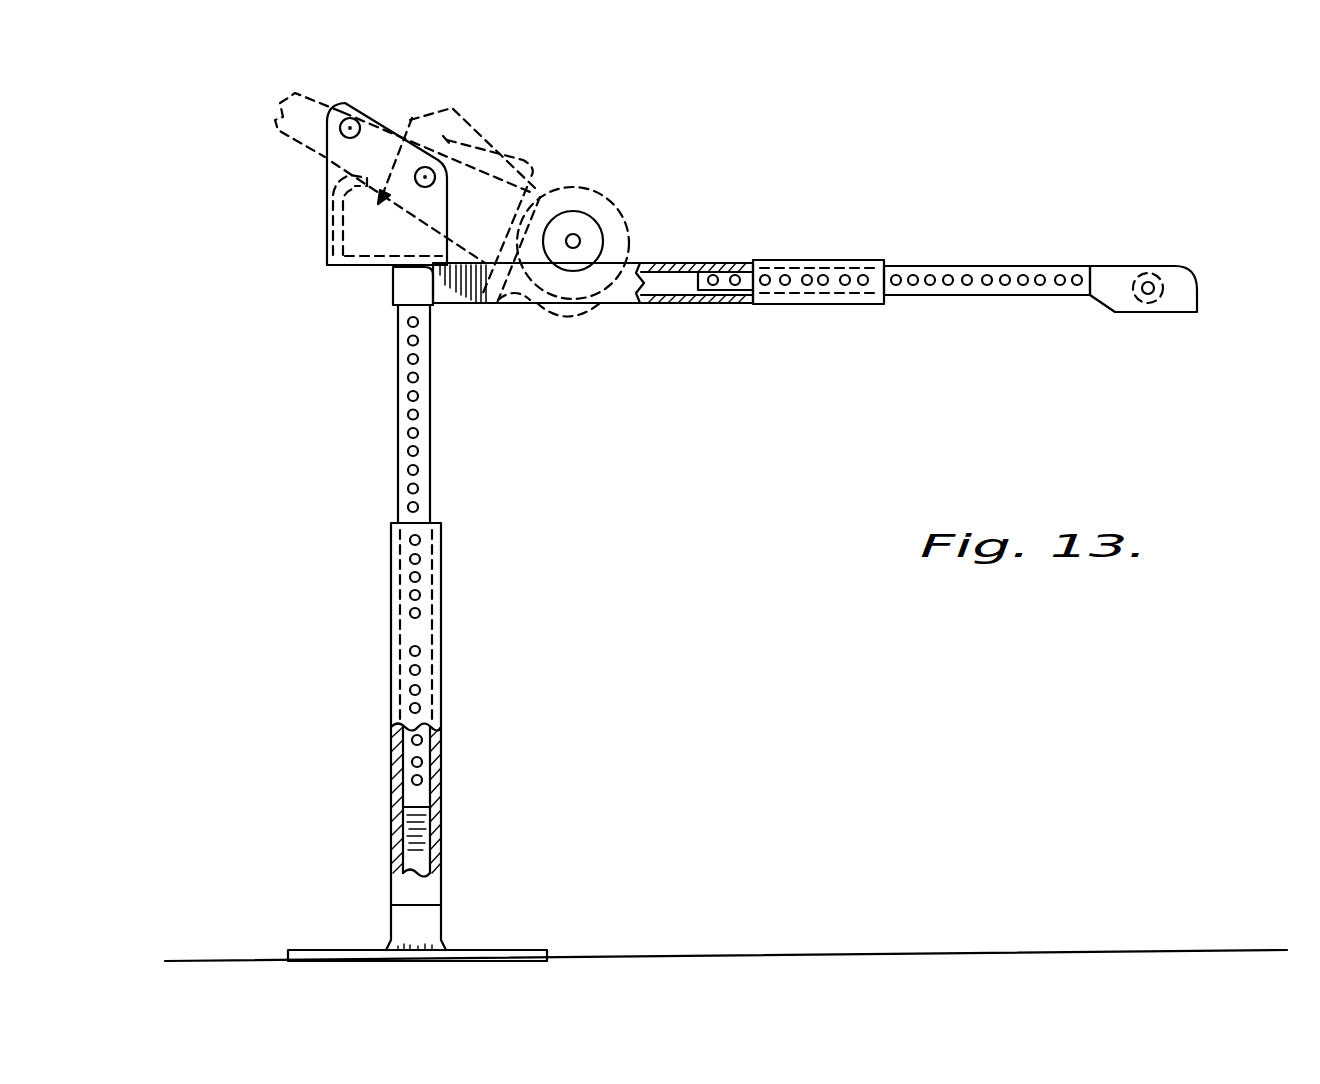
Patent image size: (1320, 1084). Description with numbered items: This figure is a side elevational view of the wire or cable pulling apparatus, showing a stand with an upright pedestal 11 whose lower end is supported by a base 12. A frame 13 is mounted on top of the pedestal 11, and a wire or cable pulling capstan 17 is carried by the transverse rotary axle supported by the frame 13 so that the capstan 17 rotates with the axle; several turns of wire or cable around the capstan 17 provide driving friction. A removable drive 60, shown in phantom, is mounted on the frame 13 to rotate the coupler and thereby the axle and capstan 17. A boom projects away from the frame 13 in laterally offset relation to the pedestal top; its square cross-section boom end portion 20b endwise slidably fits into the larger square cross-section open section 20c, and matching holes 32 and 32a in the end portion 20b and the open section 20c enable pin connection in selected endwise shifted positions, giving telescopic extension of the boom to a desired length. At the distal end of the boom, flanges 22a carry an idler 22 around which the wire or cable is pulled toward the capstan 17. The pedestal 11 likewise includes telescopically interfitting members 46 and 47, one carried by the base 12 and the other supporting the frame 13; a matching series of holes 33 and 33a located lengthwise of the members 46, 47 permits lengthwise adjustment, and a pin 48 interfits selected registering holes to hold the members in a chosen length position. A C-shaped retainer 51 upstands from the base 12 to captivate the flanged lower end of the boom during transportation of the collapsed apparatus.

The upright pedestal 11 is at (368, 604).
The base 12 is at (515, 950).
The frame 13 is at (327, 228).
The wire or cable pulling capstan 17 is at (580, 235).
The boom end portion 20b is at (1021, 300).
The open portion or section of the boom 20c is at (706, 250).
The idler 22 is at (1148, 272).
The flanges 22a is at (1180, 306).
The holes in boom end portion 32 is at (948, 276).
The holes in boom open section 32a is at (810, 283).
The holes in pedestal member 33 is at (420, 652).
The holes in pedestal member 33a is at (418, 450).
The telescopically interfitting member 46 is at (390, 763).
The telescopically interfitting member 47 is at (396, 412).
The pin 48 is at (420, 631).
The C-shaped retainer 51 is at (404, 920).
The removable drive 60 is at (540, 187).